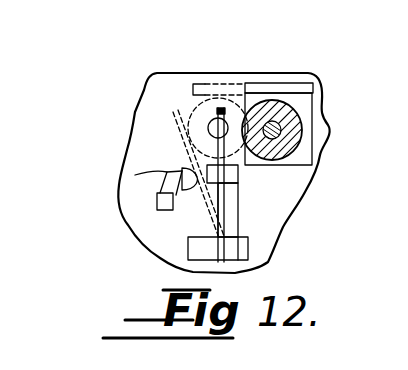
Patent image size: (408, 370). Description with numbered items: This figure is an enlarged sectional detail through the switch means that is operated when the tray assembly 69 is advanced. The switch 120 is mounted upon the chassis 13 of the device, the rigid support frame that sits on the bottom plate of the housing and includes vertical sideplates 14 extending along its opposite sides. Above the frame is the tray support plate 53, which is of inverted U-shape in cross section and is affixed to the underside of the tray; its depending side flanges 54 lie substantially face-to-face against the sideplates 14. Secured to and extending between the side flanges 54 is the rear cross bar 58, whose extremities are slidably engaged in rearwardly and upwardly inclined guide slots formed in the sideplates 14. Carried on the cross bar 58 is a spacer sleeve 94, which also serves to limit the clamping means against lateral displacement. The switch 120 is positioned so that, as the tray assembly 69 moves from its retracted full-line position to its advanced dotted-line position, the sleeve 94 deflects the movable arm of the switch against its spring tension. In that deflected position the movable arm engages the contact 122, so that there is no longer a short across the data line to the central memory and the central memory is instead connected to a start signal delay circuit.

The support frame 13 is at (136, 115).
The sideplates 14 is at (162, 82).
The tray support plate 53 is at (229, 85).
The side flanges 54 is at (313, 155).
The rear cross bar 58 is at (280, 118).
The tray assembly 69 is at (310, 106).
The spacer sleeve 94 is at (211, 83).
The switch 120 is at (242, 211).
The contact 122 is at (135, 175).